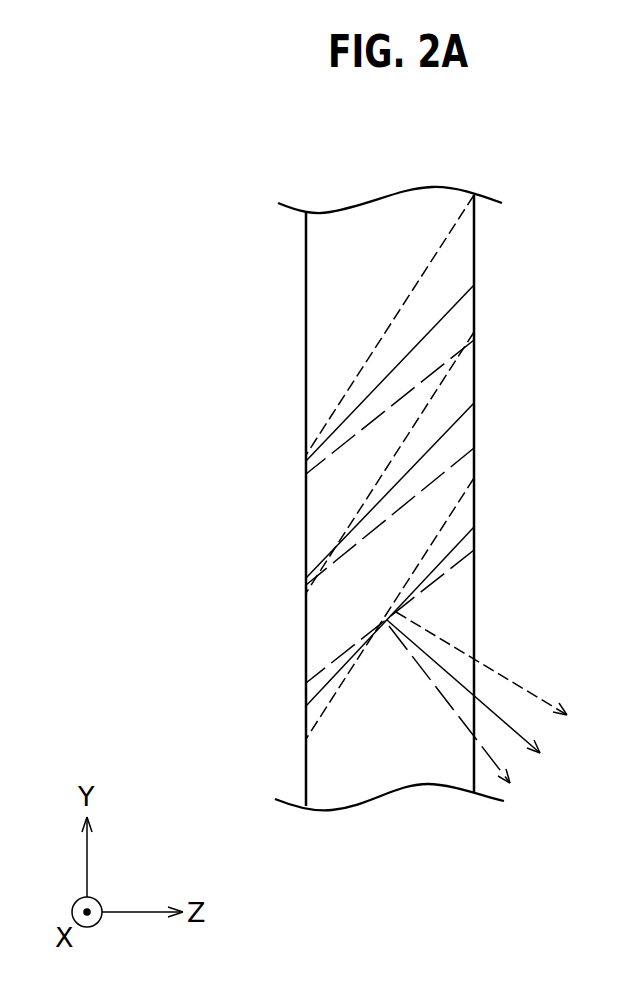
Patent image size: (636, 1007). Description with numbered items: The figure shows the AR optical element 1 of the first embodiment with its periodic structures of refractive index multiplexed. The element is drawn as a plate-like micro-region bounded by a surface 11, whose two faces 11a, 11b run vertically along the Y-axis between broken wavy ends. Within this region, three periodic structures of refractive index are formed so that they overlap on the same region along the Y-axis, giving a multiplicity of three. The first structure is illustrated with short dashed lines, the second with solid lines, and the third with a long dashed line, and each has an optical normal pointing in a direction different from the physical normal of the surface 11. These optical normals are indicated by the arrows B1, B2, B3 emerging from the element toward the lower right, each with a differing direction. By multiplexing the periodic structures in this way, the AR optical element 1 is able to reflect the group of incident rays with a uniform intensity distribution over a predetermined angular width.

The AR optical element 1 is at (460, 164).
The surface 11 is at (306, 295).
The first surface of light guide plate 11a is at (306, 295).
The second surface of light guide plate 11b is at (474, 253).
The normal of the first periodic structure of refractive index B1 is at (527, 690).
The normal of the second periodic structure of refractive index B2 is at (510, 726).
The normal of the third periodic structure of refractive index B3 is at (517, 764).